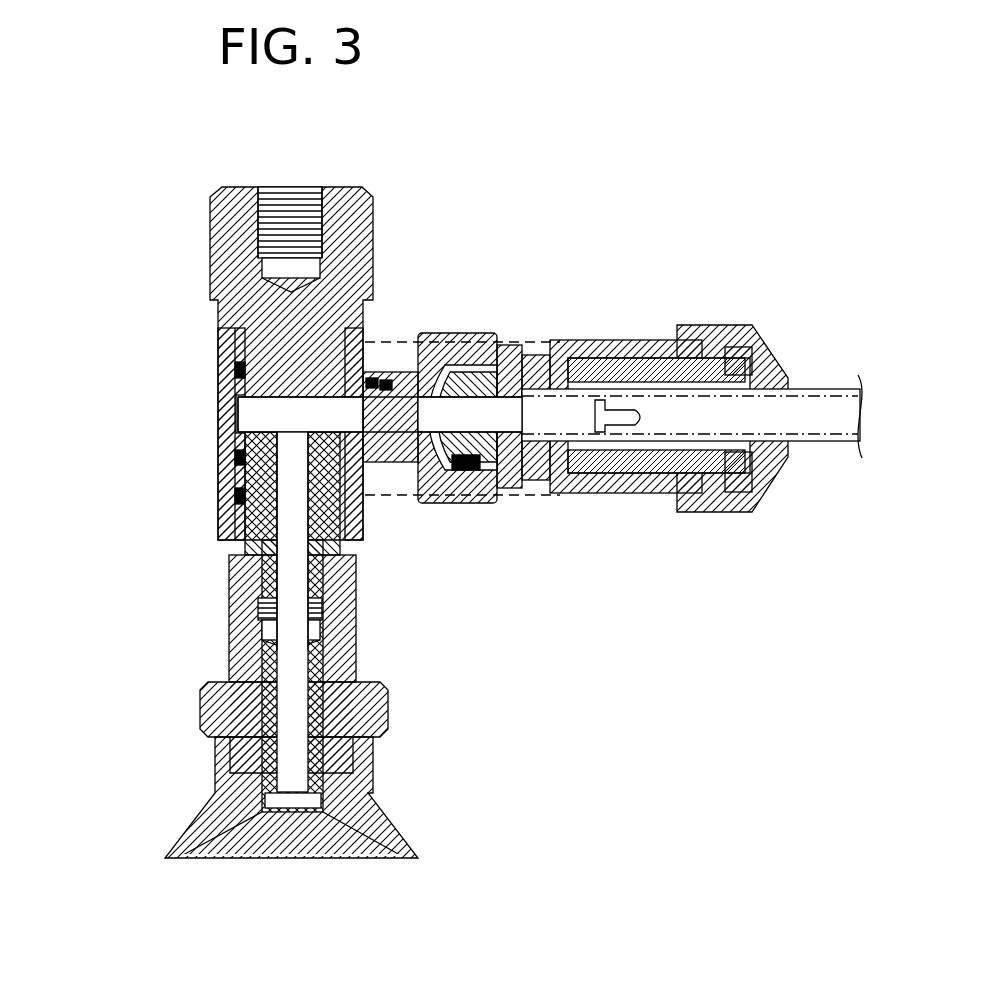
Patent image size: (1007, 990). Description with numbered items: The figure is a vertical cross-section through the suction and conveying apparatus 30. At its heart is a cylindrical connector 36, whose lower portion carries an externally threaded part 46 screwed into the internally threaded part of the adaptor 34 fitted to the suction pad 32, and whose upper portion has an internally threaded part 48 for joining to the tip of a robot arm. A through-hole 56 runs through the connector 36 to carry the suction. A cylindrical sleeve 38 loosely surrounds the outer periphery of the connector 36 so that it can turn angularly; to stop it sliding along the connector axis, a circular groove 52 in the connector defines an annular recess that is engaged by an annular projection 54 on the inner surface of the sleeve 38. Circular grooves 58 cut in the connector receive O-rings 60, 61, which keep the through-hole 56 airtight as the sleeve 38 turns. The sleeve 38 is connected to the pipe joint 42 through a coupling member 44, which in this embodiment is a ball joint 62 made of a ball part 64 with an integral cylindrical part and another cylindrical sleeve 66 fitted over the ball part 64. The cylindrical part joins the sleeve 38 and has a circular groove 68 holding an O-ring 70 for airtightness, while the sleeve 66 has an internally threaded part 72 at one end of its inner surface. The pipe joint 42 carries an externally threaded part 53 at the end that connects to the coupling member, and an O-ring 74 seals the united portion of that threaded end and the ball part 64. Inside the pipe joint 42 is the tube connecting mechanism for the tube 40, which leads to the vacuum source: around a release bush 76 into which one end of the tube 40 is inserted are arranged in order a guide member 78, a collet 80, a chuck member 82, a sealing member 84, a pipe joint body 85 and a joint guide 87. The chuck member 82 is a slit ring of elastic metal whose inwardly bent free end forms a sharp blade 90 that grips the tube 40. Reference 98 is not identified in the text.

The suction and conveying apparatus 30 is at (500, 188).
The suction pad 32 is at (382, 758).
The adaptor 34 is at (226, 617).
The cylindrical connector 36 is at (205, 243).
The cylindrical sleeve 38 is at (215, 412).
The tube 40 is at (808, 386).
The pipe joint 42 is at (659, 298).
The coupling member 44 is at (452, 314).
The externally threaded part 46 is at (328, 613).
The internally threaded part 48 is at (350, 190).
The circular groove 52 is at (222, 500).
The externally threaded part 53 is at (533, 340).
The annular projection 54 is at (335, 572).
The through-hole 56 is at (290, 780).
The circular grooves 58 is at (345, 512).
The O-ring 60 is at (222, 362).
The O-ring 61 is at (222, 462).
The ball joint 62 is at (462, 518).
The ball part 64 is at (510, 498).
The cylindrical sleeve 66 is at (435, 335).
The circular groove 68 is at (372, 378).
The O-ring 70 is at (386, 380).
The internally threaded part 72 is at (473, 352).
The O-ring 74 is at (485, 505).
The release bush 76 is at (755, 488).
The guide member 78 is at (722, 480).
The collet 80 is at (640, 495).
The chuck member 82 is at (620, 495).
The sealing member 84 is at (612, 340).
The pipe joint body 85 is at (692, 330).
The joint guide 87 is at (735, 325).
The blade 90 is at (617, 494).
The seal 98 is at (547, 494).